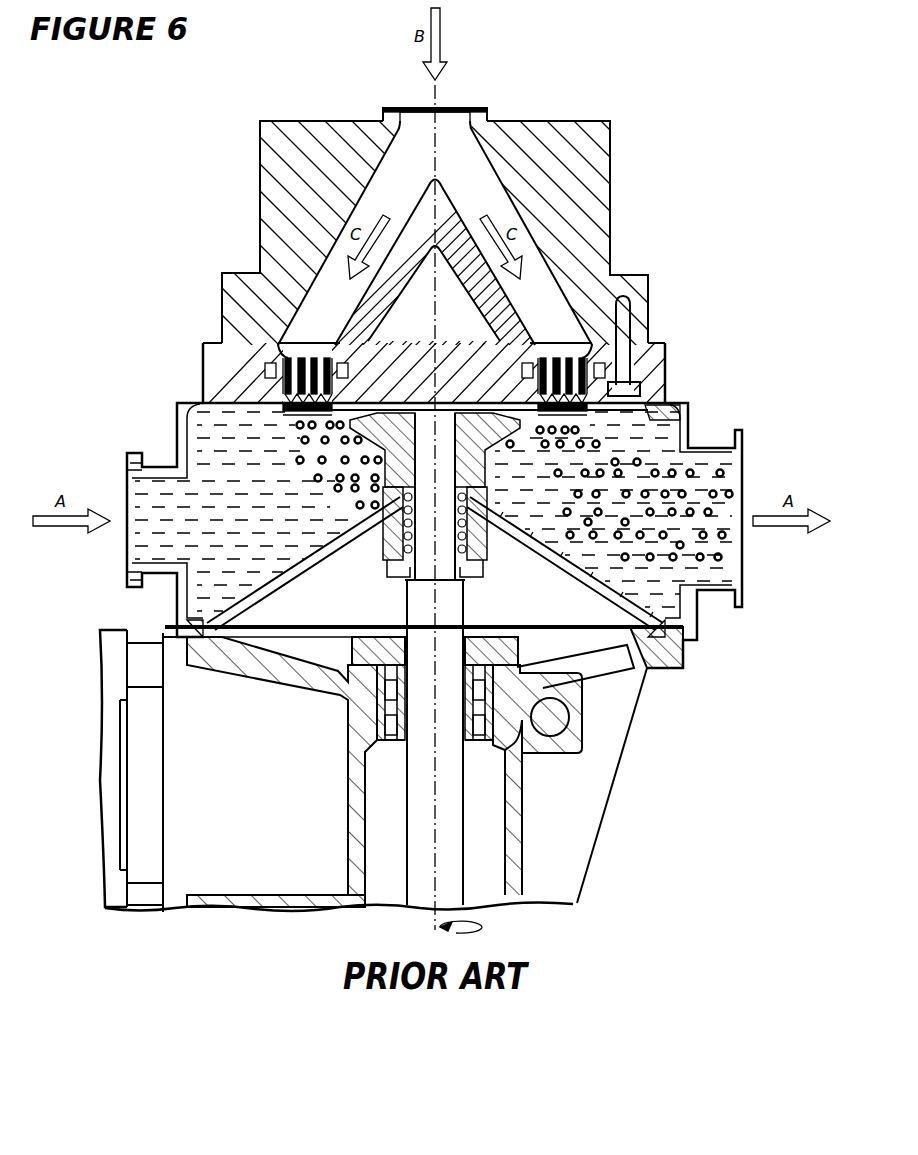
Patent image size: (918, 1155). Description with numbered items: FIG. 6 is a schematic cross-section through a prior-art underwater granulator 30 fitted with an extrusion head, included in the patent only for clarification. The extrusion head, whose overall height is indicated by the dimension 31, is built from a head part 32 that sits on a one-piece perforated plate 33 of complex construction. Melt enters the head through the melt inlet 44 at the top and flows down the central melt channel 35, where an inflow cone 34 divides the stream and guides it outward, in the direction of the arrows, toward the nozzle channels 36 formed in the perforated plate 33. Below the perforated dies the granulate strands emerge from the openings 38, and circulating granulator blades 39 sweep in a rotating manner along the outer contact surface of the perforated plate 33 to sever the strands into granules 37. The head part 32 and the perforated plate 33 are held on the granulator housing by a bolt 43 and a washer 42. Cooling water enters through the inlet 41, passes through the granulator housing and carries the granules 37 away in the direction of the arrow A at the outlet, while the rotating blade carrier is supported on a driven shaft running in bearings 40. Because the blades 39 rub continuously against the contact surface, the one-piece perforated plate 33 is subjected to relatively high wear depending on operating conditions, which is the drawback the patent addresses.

The mixing device housing 30 is at (733, 392).
The feed head height 31 is at (380, 108).
The feed head block 32 is at (260, 183).
The cover plate 33 is at (250, 341).
The distribution cone 34 is at (436, 180).
The feed channel 35 is at (500, 218).
The nozzle 36 is at (312, 358).
The gas bubbles 37 is at (315, 445).
The nozzle outlet 38 is at (300, 414).
The rotor plate 39 is at (588, 412).
The bearing 40 is at (343, 498).
The inlet 41 is at (130, 533).
The washer 42 is at (641, 389).
The bolt 43 is at (628, 316).
The inlet opening 44 is at (448, 108).